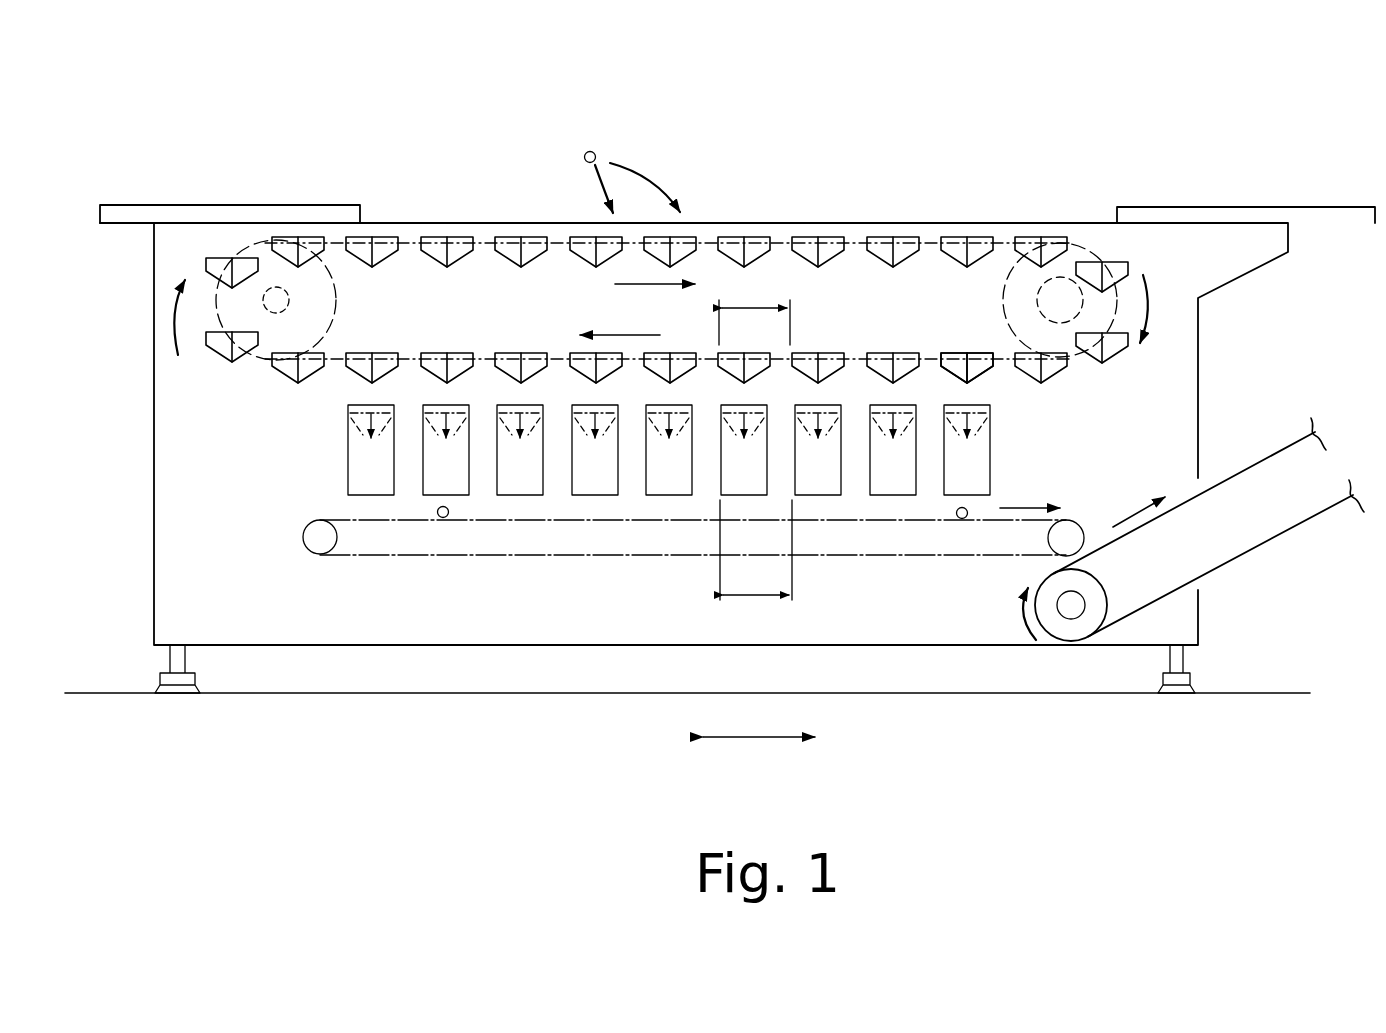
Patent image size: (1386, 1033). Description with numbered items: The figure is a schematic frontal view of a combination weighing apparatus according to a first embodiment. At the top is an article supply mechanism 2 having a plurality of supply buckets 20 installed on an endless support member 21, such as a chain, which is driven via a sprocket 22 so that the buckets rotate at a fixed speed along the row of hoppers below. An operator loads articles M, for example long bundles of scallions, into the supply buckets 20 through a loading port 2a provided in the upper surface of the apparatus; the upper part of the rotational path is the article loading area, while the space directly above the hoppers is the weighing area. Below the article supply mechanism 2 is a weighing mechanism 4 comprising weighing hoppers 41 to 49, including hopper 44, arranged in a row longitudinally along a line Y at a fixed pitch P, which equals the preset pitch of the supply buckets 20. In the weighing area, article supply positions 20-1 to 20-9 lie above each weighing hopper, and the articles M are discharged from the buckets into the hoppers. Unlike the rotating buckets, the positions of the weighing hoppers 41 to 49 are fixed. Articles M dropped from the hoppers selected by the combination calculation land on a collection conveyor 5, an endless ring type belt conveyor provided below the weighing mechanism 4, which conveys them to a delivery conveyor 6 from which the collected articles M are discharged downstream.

The article supply mechanism 2 is at (865, 188).
The loading port 2a is at (362, 215).
The supply buckets 20 is at (510, 237).
The article supply position 20-1 is at (386, 343).
The article supply position 20-9 is at (955, 350).
The endless support member 21 is at (990, 250).
The sprocket 22 is at (1078, 245).
The articles M is at (589, 151).
The pitch P is at (755, 436).
The weighing mechanism 4 is at (297, 465).
The weighing hopper 41 is at (346, 432).
The weighing hopper 44 is at (575, 440).
The weighing hopper 49 is at (990, 447).
The collection conveyor 5 is at (676, 555).
The delivery conveyor 6 is at (1265, 540).
The line Y is at (758, 737).